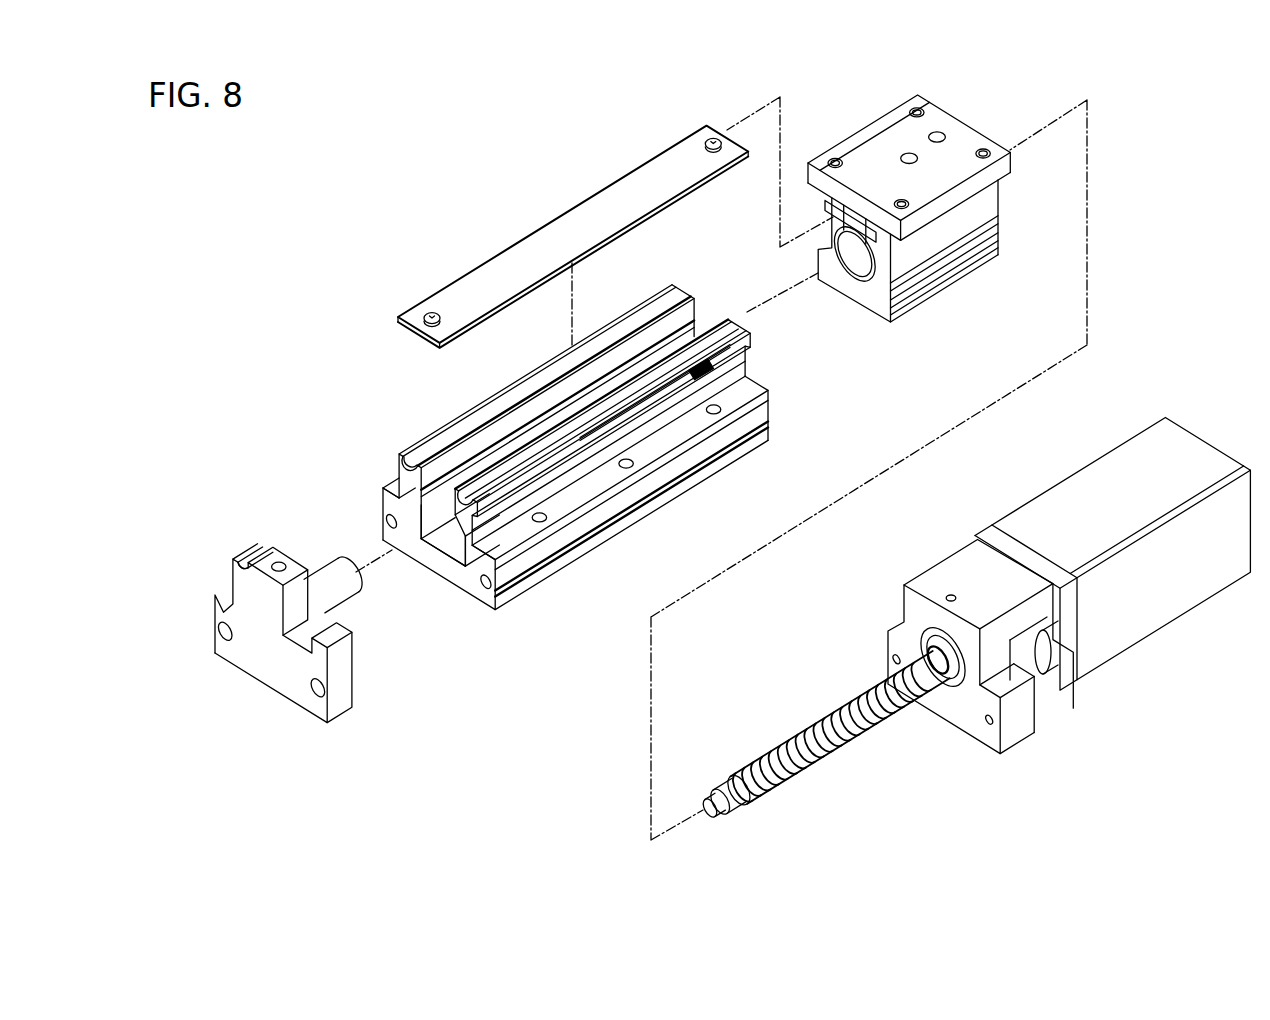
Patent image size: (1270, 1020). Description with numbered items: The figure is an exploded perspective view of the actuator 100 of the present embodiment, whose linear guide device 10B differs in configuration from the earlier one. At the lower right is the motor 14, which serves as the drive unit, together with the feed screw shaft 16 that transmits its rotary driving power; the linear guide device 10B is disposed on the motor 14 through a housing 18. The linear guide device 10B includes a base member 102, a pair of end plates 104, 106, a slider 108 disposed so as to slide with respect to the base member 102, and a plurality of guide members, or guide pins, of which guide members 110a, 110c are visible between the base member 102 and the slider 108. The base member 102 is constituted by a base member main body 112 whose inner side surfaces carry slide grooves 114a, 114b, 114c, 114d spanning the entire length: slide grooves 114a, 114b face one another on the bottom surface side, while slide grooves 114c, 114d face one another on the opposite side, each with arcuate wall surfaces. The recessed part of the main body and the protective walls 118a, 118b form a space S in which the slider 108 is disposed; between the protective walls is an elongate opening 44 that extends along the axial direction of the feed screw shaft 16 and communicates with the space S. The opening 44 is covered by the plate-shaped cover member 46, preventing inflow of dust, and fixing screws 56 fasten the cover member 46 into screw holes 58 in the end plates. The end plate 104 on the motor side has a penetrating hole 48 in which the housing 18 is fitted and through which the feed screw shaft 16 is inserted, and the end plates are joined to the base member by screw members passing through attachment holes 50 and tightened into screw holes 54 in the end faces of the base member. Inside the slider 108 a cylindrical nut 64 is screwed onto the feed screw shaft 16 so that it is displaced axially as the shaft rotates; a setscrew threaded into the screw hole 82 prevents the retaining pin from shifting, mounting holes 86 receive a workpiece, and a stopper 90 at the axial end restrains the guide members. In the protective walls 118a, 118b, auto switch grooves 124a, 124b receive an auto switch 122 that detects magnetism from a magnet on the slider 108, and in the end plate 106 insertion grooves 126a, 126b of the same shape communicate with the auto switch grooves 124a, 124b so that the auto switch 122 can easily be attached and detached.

The actuator 100 is at (357, 168).
The linear guide device 10B is at (912, 70).
The motor 14 is at (1170, 625).
The feed screw shaft 16 is at (792, 768).
The housing 18 is at (1060, 660).
The opening 44 is at (628, 353).
The cover member 46 is at (576, 215).
The penetrating hole 48 is at (946, 692).
The attachment holes 50 is at (222, 653).
The screw holes 54 is at (389, 523).
The fixing screws 56 is at (714, 130).
The screw holes 58 is at (283, 562).
The nut 64 is at (860, 275).
The screw hole 82 is at (938, 134).
The mounting holes 86 is at (982, 150).
The stopper 90 is at (834, 288).
The base member 102 is at (491, 600).
The end plate 104 is at (1015, 736).
The end plate 106 is at (258, 664).
The slider 108 is at (880, 128).
The guide member (guide pin) 110a is at (915, 295).
The guide member (guide pin) 110c is at (965, 268).
The base member main body 112 is at (620, 530).
The slide groove 114a is at (466, 573).
The slide groove 114b is at (409, 535).
The slide groove 114c is at (480, 572).
The slide groove 114d is at (399, 505).
The protective wall 118a is at (664, 420).
The protective wall 118b is at (527, 385).
The auto switch 122 is at (682, 390).
The auto switch groove 124a is at (748, 336).
The auto switch groove 124b is at (404, 468).
The insertion groove 126a is at (338, 614).
The insertion groove 126b is at (236, 577).
The space S is at (441, 570).